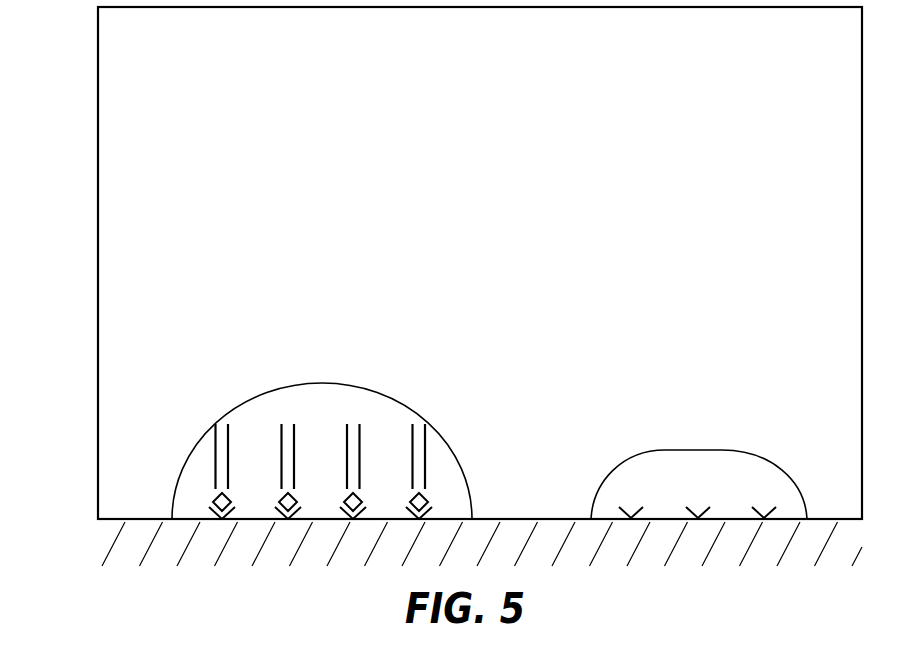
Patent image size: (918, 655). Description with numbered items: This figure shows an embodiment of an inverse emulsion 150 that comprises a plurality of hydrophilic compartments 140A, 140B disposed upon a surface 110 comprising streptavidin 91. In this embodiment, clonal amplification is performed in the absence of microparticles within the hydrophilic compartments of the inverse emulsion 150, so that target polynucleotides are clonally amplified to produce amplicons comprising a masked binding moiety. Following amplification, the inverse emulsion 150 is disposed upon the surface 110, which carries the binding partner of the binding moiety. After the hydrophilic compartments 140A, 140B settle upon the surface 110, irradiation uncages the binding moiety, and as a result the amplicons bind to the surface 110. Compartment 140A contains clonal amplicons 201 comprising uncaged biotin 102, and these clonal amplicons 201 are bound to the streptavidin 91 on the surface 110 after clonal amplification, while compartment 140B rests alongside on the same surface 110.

The inverse emulsion 150 is at (86, 8).
The surface 110 is at (88, 523).
The hydrophilic compartment 140A is at (316, 383).
The hydrophilic compartment 140B is at (687, 450).
The clonal amplicons 201 is at (279, 430).
The uncaged biotin 102 is at (214, 499).
The streptavidin 91 is at (211, 513).